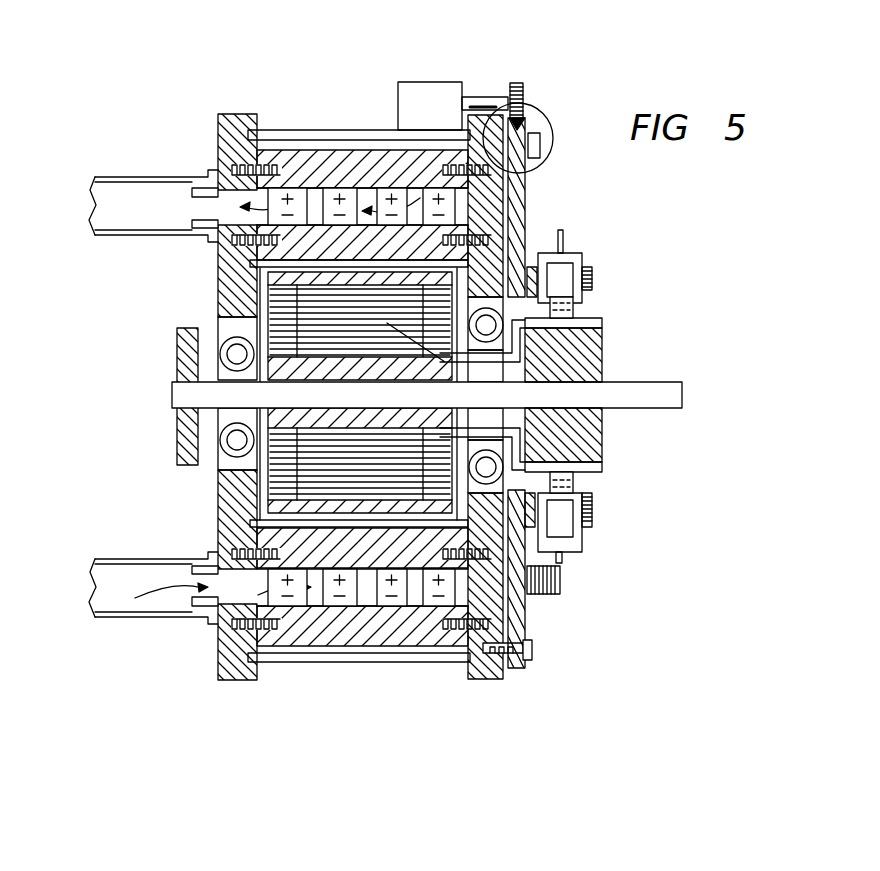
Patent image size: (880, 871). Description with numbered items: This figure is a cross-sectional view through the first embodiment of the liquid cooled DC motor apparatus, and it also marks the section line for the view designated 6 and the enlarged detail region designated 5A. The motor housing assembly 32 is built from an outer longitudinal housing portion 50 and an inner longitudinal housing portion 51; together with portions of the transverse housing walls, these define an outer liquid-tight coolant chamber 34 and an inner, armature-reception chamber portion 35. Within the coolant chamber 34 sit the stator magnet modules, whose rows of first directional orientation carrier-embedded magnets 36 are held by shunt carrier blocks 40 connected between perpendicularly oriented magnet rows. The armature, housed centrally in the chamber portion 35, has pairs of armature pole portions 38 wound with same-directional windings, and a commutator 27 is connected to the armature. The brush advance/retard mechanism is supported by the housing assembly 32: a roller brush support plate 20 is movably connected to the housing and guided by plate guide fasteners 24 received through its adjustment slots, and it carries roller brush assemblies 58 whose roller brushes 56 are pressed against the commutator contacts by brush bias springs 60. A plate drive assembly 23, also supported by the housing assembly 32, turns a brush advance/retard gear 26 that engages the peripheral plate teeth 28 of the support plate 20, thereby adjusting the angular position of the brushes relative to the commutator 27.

The roller brush support plate 20 is at (528, 184).
The plate drive assembly 23 is at (490, 72).
The plate guide fasteners 24 is at (540, 130).
The brush advance/retard gear 26 is at (522, 83).
The commutator 27 is at (625, 320).
The peripheral plate teeth 28 is at (532, 120).
The motor housing assembly 32 is at (228, 135).
The liquid-tight coolant chamber 34 is at (372, 145).
The inner, armature-reception chamber portion 35 is at (259, 312).
The first directional orientation carrier-embedded magnets 36 is at (331, 197).
The armature pole portions 38 is at (603, 367).
The shunt carrier block 40 is at (351, 163).
The outer longitudinal housing portion 50 is at (272, 130).
The inner longitudinal housing portion 51 is at (217, 278).
The roller brushes 56 is at (566, 275).
The roller brush assemblies 58 is at (603, 232).
The brush bias springs 60 is at (562, 587).
The section line 6- 6 is at (405, 45).
The detail circle 5A is at (545, 140).